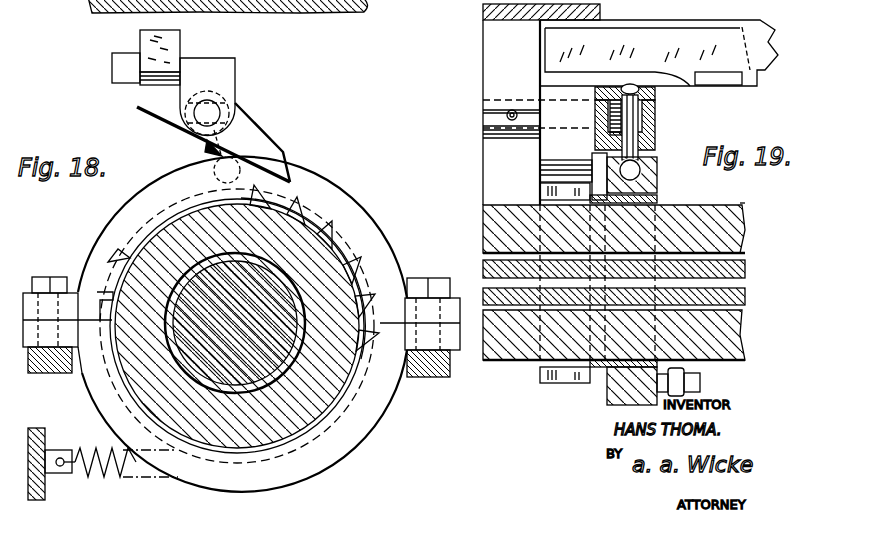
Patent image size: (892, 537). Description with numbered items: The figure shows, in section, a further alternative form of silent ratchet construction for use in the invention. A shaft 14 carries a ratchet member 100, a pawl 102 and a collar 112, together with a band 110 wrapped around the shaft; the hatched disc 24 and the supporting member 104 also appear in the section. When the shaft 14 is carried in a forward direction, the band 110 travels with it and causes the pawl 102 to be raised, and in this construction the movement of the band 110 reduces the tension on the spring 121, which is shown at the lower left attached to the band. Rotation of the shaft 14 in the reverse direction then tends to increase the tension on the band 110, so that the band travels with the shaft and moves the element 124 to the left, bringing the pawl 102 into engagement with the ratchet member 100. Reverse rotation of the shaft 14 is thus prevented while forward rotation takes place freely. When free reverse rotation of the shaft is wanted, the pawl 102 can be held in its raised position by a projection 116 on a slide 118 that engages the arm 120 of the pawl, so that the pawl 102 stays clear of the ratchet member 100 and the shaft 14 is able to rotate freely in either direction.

In FIG. 18, the shaft 14 is at (284, 12).
In FIG. 19, the shaft 14 is at (745, 291).
In FIG. 18, the toothed disc 24 is at (320, 258).
In FIG. 19, the toothed disc 24 is at (732, 226).
In FIG. 18, the ratchet member 100 is at (350, 217).
In FIG. 19, the ratchet member 100 is at (553, 190).
In FIG. 18, the pawl 102 is at (255, 133).
In FIG. 19, the pawl 102 is at (560, 167).
In FIG. 19, the support column 104 is at (498, 57).
In FIG. 18, the band 110 is at (100, 232).
In FIG. 19, the band 110 is at (593, 204).
In FIG. 18, the collar 112 is at (297, 188).
In FIG. 19, the collar 112 is at (755, 195).
In FIG. 18, the projection 116 is at (147, 87).
In FIG. 19, the projection 116 is at (681, 88).
In FIG. 18, the slide 118 is at (178, 43).
In FIG. 19, the slide 118 is at (740, 86).
In FIG. 18, the arm 120 is at (153, 110).
In FIG. 18, the spring 121 is at (134, 479).
In FIG. 19, the spring 121 is at (684, 369).
In FIG. 18, the element 124 is at (233, 158).
In FIG. 19, the element 124 is at (655, 128).